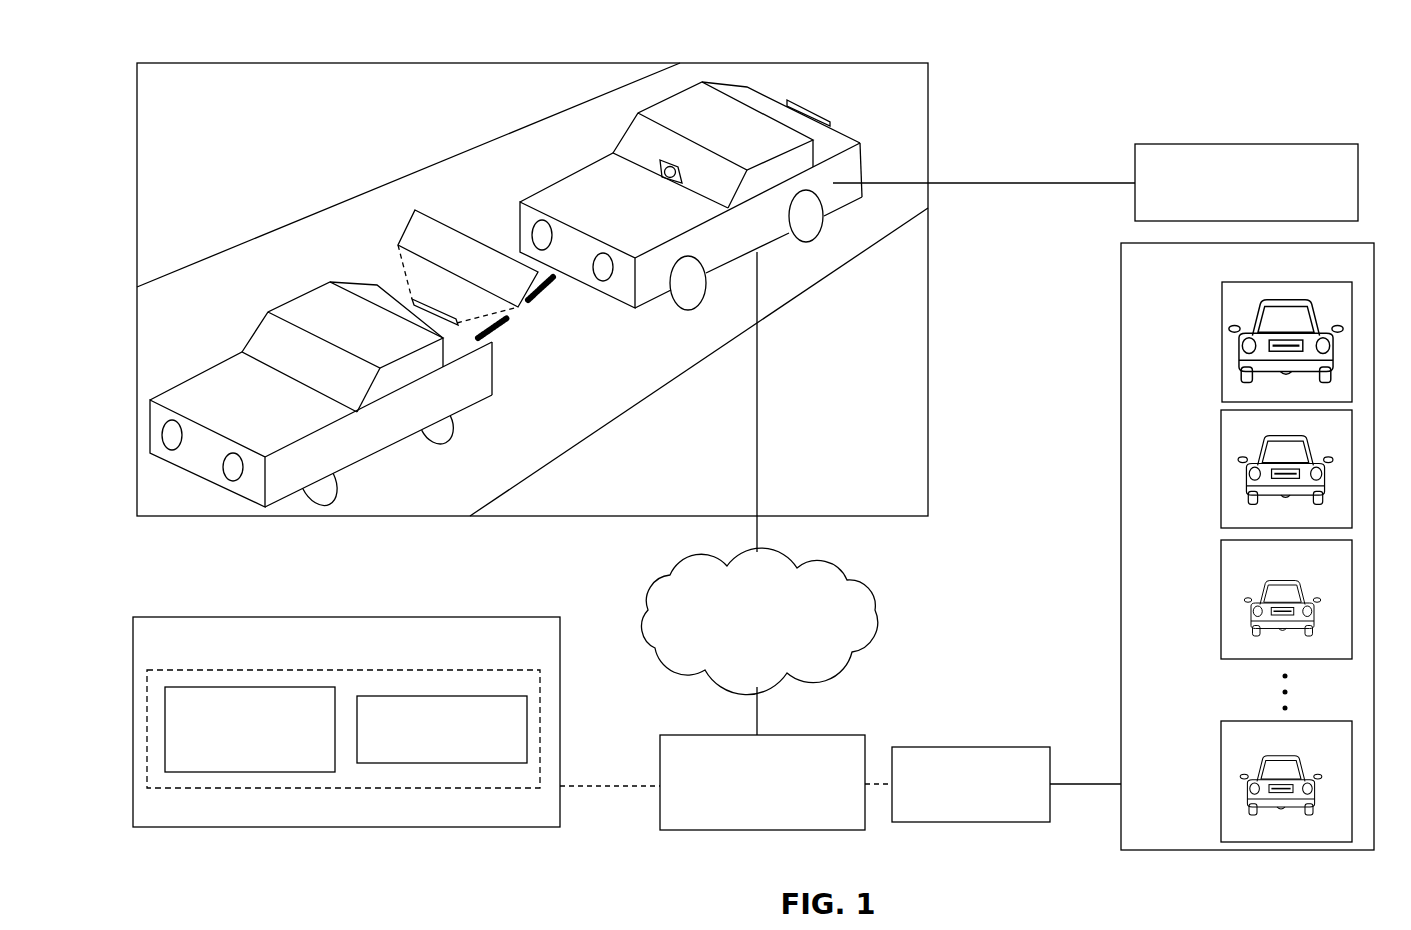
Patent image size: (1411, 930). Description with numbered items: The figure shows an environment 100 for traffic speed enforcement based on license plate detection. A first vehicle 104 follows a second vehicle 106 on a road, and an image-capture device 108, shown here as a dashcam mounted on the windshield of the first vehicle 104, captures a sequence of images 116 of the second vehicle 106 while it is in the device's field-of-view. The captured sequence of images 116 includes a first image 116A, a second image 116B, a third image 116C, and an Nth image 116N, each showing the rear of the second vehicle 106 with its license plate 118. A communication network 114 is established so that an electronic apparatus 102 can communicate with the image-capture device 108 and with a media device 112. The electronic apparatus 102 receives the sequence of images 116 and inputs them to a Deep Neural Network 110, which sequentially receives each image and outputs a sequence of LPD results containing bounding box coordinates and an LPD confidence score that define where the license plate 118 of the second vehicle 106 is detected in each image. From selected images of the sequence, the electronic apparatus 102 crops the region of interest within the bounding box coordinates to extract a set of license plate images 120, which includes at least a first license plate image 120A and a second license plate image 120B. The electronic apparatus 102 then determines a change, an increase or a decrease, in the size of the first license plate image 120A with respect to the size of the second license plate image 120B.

The environment 100 is at (1343, 89).
The electronic apparatus 102 is at (830, 809).
The first vehicle 104 is at (680, 93).
The second vehicle 106 is at (300, 295).
The image-capture device 108 is at (660, 162).
The Deep Neural Network 110 is at (1033, 811).
The media device 112 is at (1332, 195).
The communication network 114 is at (820, 644).
The sequence of images 116 is at (1363, 277).
The first image 116A is at (1222, 348).
The second image 116B is at (1222, 472).
The third image 116C is at (1222, 597).
The Nth image 116N is at (1222, 788).
The license plate 118 is at (415, 210).
The set of license plate images 120 is at (527, 652).
The first license plate image 120A is at (227, 772).
The second license plate image 120B is at (442, 763).